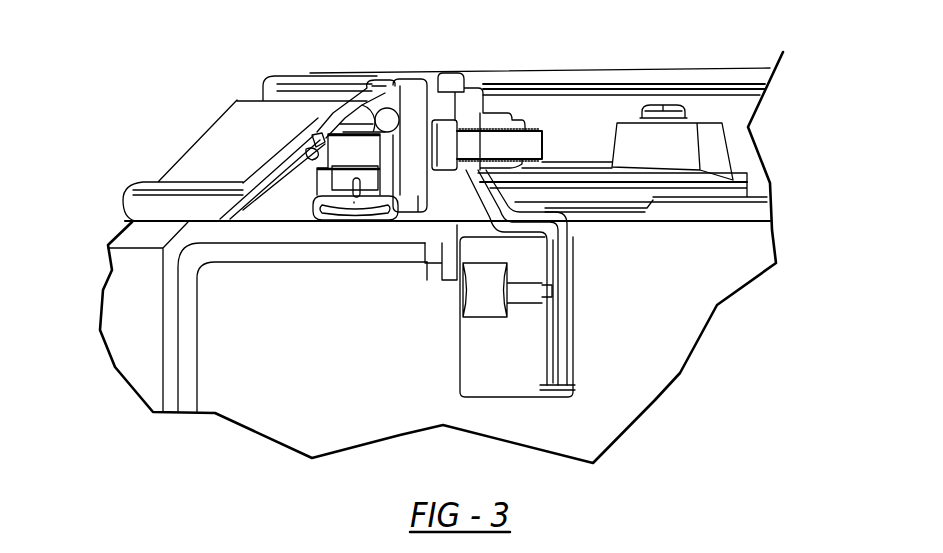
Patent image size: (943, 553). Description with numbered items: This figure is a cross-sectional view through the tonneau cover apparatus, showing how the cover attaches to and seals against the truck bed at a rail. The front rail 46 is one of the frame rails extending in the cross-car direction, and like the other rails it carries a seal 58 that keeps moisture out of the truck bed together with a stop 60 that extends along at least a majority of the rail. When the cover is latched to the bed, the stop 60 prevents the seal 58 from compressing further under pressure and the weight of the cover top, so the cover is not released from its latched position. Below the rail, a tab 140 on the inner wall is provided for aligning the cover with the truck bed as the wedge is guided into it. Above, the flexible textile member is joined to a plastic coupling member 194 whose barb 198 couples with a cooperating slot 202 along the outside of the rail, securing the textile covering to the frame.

The plastic coupling member 194 is at (223, 138).
The cooperating slot 202 is at (305, 143).
The barb 198 is at (311, 152).
The seal 58 is at (354, 220).
The stop 60 is at (436, 216).
The front rail 46 is at (407, 80).
The tab 140 is at (515, 370).